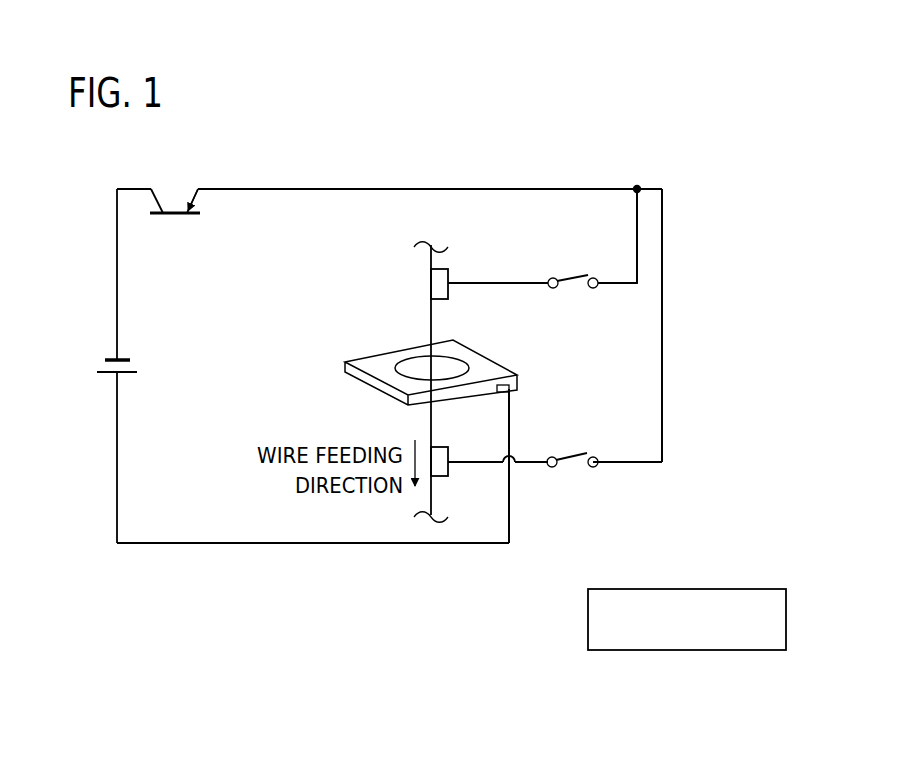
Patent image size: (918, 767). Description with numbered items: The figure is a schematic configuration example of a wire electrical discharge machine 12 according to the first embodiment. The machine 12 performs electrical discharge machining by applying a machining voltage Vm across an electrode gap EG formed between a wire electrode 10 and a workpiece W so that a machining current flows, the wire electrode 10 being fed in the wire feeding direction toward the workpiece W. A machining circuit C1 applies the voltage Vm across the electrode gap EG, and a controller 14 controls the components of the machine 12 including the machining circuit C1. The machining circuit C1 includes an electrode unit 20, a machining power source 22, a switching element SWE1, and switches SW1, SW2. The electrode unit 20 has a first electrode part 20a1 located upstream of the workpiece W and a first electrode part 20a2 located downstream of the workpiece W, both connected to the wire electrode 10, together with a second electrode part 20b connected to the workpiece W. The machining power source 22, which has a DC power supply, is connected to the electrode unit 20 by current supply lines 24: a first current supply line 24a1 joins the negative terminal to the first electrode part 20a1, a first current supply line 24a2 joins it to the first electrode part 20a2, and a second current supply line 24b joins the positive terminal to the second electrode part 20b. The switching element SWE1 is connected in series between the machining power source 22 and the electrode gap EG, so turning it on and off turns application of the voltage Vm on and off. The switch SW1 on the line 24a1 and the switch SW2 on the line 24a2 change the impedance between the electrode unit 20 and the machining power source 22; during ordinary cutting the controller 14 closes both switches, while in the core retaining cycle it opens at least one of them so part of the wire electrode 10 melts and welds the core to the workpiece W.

The wire electrical discharge machine 12 is at (270, 126).
The machining circuit C1 is at (518, 186).
The switching element SWE1 is at (173, 219).
The machining power source 22 is at (103, 354).
The machining voltage Vm is at (96, 390).
The wire electrode 10 is at (433, 327).
The electrode unit 20 is at (344, 372).
The first electrode part 20a1 is at (431, 283).
The first electrode part 20a2 is at (441, 447).
The second electrode part 20b is at (497, 389).
The workpiece W is at (381, 362).
The electrode gap EG is at (415, 365).
The switch SW1 is at (560, 268).
The switch SW2 is at (579, 472).
The current supply lines 24 is at (674, 366).
The first current supply line 24a1 is at (638, 267).
The first current supply line 24a2 is at (663, 319).
The second current supply line 24b is at (510, 423).
The controller 14 is at (736, 588).